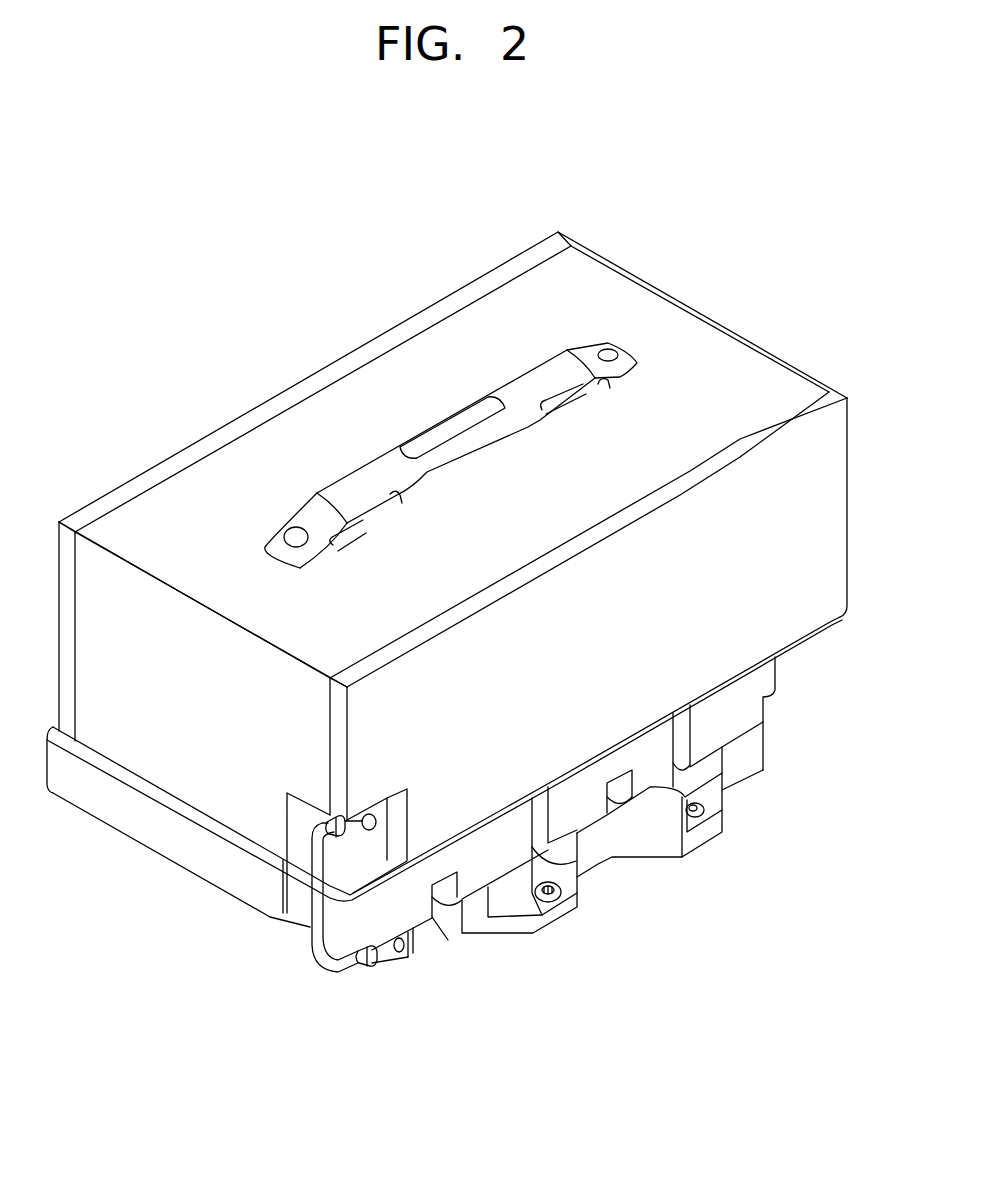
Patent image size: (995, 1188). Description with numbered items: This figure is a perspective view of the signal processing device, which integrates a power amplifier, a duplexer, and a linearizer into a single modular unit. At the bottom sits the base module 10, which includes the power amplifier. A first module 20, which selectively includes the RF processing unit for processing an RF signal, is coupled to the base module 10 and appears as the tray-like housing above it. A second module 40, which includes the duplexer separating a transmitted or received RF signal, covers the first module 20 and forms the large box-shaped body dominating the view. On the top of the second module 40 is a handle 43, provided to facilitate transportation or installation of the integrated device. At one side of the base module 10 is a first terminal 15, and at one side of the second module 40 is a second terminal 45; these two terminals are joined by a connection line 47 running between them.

The base module 10 is at (760, 810).
The first terminal 15 is at (377, 964).
The first module 20 is at (177, 885).
The second module 40 is at (793, 337).
The handle 43 is at (588, 353).
The second terminal 45 is at (345, 830).
The connection line 47 is at (315, 947).